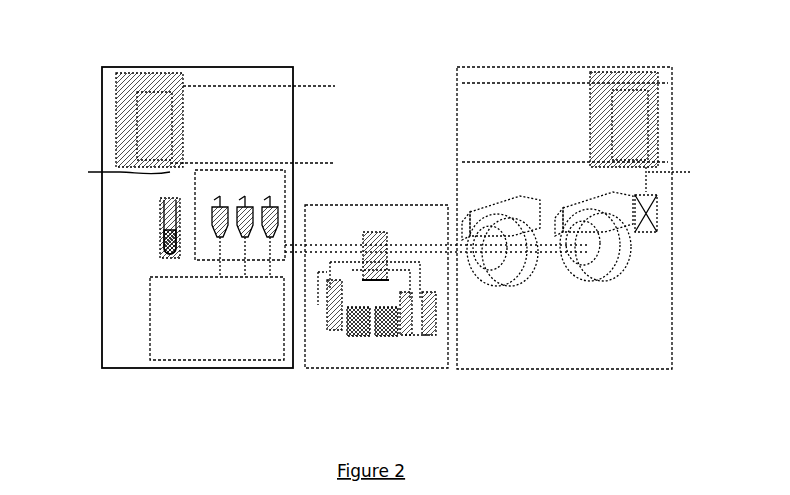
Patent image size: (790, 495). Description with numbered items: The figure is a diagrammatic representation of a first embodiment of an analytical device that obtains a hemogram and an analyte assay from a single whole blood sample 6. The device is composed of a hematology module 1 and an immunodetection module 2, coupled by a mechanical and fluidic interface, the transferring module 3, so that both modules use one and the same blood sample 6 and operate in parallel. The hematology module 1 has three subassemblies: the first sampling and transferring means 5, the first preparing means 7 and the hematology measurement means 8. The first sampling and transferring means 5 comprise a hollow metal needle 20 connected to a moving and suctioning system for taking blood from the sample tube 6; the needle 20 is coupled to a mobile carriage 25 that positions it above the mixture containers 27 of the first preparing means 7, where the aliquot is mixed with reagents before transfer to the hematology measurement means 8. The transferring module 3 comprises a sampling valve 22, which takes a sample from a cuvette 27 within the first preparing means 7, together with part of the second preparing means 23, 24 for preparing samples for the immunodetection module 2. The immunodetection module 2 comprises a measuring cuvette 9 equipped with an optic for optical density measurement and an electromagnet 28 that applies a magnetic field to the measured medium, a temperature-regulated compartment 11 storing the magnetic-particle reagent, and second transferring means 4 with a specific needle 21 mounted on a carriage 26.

The hematology module 1 is at (124, 371).
The immunodetection module 2 is at (603, 371).
The transferring module 3 is at (422, 210).
The second transferring means 4 is at (650, 80).
The first sampling and transferring means 5 is at (126, 78).
The whole blood sample 6 is at (165, 240).
The first preparing means 7 is at (293, 172).
The hematology measurement means 8 is at (237, 362).
The measuring cuvette 9 is at (503, 208).
The temperature-regulated compartment 11 is at (657, 215).
The hollow metal needle 20 is at (116, 174).
The specific needle 21 is at (679, 179).
The sampling valve 22 is at (374, 230).
The second preparing means part 23 is at (362, 336).
The second preparing means part 24 is at (388, 336).
The mobile carriage 25 is at (172, 73).
The carriage 26 is at (608, 72).
The mixture containers 27 is at (270, 206).
The electromagnet 28 is at (513, 278).